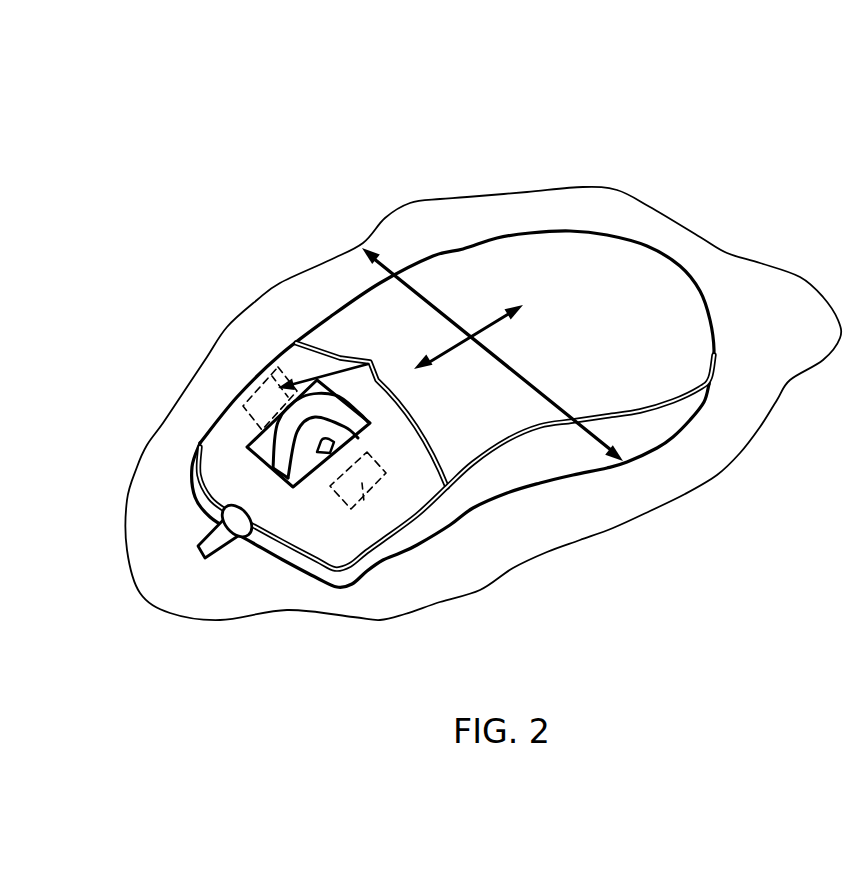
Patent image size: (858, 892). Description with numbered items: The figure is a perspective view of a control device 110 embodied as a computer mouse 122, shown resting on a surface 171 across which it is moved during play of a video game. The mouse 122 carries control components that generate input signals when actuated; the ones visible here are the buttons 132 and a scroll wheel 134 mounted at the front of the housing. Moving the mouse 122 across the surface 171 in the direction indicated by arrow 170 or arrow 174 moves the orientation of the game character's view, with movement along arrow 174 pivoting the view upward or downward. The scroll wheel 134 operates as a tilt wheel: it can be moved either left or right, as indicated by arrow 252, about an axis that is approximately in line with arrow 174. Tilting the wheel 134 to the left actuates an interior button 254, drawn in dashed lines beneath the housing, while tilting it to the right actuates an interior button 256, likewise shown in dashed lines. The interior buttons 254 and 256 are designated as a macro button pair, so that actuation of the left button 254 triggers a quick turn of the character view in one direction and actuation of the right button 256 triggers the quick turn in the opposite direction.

The control device 110 is at (411, 422).
The computer mouse 122 is at (462, 277).
The buttons 132 is at (210, 462).
The scroll wheel 134 is at (280, 450).
The arrow 170 is at (537, 388).
The surface 171 is at (697, 485).
The arrow 174 is at (490, 321).
The arrow 252 is at (337, 438).
The interior button 254 is at (364, 502).
The interior button 256 is at (268, 385).